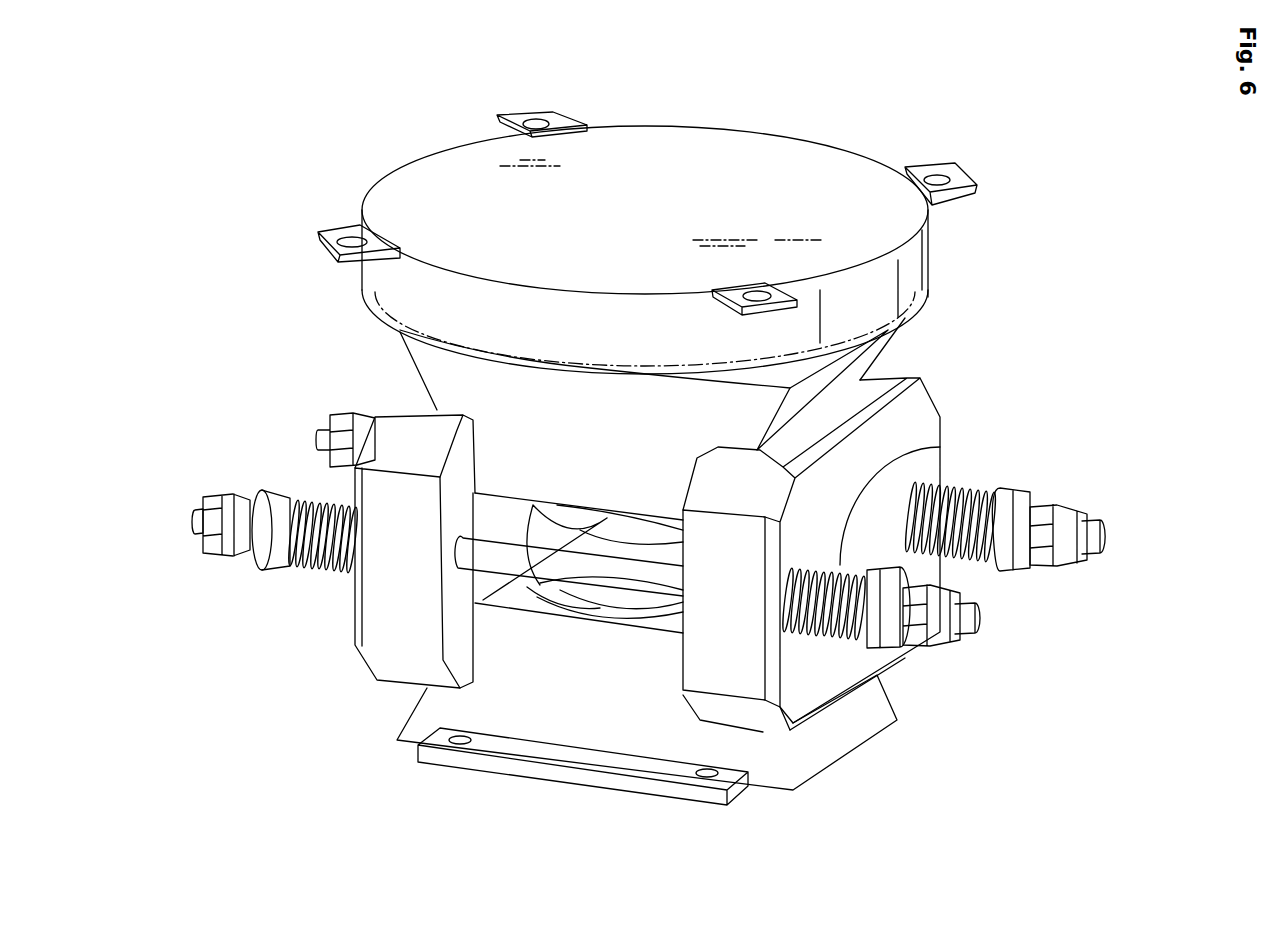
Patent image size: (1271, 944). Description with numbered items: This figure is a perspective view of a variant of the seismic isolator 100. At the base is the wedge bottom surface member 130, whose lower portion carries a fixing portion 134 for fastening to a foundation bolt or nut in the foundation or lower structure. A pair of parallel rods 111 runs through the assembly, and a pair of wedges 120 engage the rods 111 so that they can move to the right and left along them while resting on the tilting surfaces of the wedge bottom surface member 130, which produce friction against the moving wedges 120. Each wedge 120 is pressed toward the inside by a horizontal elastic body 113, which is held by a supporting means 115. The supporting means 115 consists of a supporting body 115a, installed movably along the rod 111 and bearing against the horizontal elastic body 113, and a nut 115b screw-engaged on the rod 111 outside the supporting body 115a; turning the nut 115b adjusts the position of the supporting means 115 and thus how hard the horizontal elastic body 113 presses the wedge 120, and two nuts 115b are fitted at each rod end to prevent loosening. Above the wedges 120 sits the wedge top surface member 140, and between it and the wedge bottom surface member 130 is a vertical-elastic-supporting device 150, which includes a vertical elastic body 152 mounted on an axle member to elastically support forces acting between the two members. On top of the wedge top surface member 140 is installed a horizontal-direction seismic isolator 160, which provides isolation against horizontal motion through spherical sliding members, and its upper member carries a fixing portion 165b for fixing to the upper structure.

The seismic isolator 100 is at (258, 158).
The horizontal-direction seismic isolator 160 is at (438, 181).
The fixing portion 165b is at (945, 186).
The wedge top surface member 140 is at (403, 366).
The wedge 120 is at (922, 416).
The horizontal elastic body 113 is at (940, 450).
The supporting means 115 is at (907, 660).
The supporting body 115a is at (920, 578).
The nut 115b is at (935, 648).
The rod 111 is at (977, 622).
The wedge bottom surface member 130 is at (842, 740).
The fixing portion 134 is at (640, 780).
The vertical-elastic-supporting device 150 is at (548, 521).
The vertical elastic body 152 is at (607, 520).